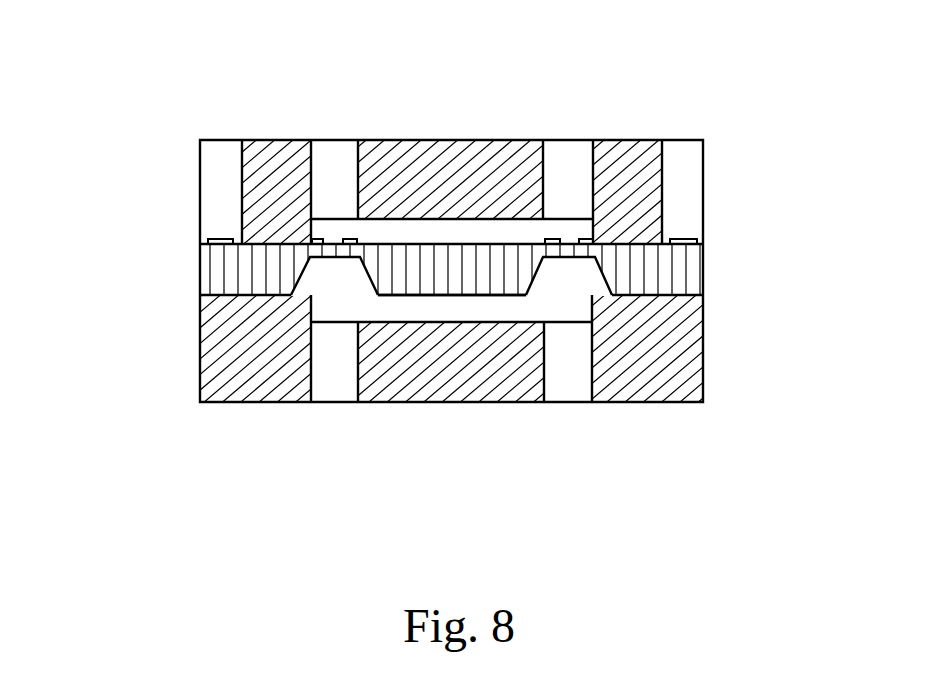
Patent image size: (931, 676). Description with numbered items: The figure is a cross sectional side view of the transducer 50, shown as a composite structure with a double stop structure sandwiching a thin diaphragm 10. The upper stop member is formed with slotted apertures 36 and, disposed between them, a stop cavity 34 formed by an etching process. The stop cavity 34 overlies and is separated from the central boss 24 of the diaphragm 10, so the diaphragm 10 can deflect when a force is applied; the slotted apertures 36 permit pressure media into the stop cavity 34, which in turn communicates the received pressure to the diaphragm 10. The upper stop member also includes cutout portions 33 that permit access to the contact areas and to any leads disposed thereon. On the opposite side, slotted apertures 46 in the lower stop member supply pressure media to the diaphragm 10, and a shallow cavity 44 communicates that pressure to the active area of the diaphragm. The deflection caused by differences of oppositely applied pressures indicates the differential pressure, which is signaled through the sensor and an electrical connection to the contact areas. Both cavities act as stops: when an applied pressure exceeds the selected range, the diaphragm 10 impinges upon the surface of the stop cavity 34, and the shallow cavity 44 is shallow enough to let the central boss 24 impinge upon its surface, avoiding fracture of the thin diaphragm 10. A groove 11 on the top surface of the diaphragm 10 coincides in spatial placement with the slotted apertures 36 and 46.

The transducer 50 is at (150, 210).
The diaphragm 10 is at (210, 270).
The groove 11 is at (557, 287).
The central boss 24 is at (415, 288).
The cutout portions 33 is at (222, 153).
The stop cavity 34 is at (478, 233).
The slotted apertures 36 is at (328, 155).
The shallow cavity 44 is at (440, 308).
The slotted apertures 46 is at (340, 387).